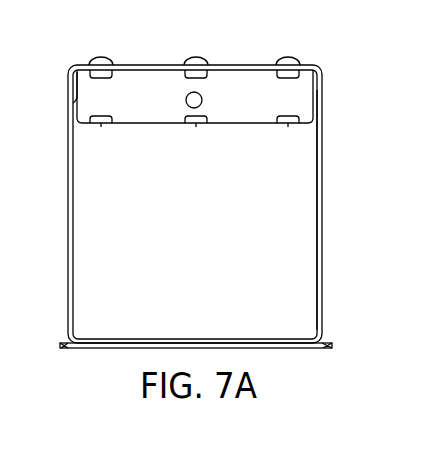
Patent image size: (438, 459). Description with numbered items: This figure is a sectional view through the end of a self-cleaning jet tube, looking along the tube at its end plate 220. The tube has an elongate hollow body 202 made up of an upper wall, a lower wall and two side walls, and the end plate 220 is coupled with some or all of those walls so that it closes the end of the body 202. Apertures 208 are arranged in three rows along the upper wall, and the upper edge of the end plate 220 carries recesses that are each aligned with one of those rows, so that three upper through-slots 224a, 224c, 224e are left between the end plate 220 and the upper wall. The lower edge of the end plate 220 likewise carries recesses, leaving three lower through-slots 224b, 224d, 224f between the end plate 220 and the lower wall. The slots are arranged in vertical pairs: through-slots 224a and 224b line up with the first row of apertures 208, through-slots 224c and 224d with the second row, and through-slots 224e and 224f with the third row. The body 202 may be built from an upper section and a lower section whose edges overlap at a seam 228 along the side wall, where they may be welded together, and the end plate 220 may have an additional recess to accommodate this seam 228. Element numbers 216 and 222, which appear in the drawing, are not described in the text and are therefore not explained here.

The elongate hollow body 202 is at (351, 208).
The apertures 208 is at (102, 61).
The base plate 216 is at (314, 347).
The end plate 220 is at (302, 102).
The hole 222 is at (200, 93).
The through-slot 224a is at (276, 63).
The through-slot 224b is at (288, 126).
The through-slot 224c is at (184, 65).
The through-slot 224d is at (196, 126).
The through-slot 224e is at (90, 65).
The through-slot 224f is at (101, 126).
The seam 228 is at (322, 86).